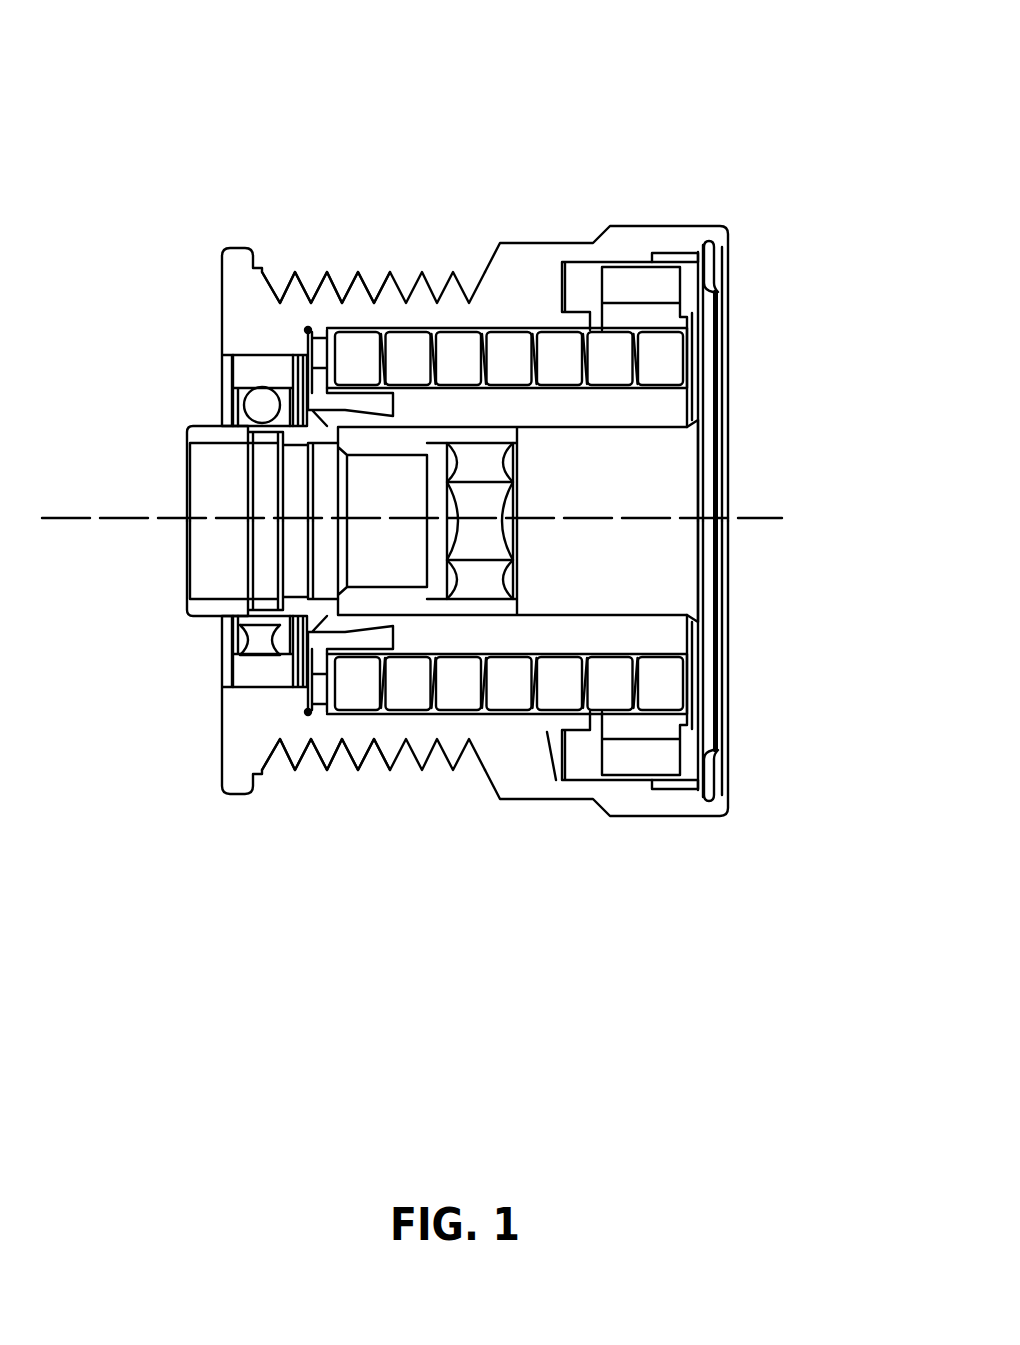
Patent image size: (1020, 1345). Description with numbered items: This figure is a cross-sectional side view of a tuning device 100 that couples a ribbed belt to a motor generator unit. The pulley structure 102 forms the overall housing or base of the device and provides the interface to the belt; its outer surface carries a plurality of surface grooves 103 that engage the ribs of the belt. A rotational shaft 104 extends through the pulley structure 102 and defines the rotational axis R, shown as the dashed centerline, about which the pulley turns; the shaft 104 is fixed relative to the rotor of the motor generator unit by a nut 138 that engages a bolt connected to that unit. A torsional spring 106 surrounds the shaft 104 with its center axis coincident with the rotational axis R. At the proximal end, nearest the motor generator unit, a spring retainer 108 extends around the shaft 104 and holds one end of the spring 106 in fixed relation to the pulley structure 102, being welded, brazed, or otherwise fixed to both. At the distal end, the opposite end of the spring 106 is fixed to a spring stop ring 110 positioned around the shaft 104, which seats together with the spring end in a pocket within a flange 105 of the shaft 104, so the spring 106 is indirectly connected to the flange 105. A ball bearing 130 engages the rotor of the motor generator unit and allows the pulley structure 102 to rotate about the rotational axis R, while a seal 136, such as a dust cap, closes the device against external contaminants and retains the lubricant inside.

The tuning device 100 is at (172, 100).
The pulley structure 102 is at (450, 272).
The surface grooves 103 is at (345, 300).
The rotational shaft 104 is at (512, 395).
The flange 105 is at (635, 263).
The torsional spring 106 is at (440, 715).
The spring retainer 108 is at (307, 697).
The spring stop ring 110 is at (667, 303).
The ball bearing 130 is at (221, 400).
The seal 136 is at (733, 343).
The nut 138 is at (517, 590).
The rotational axis R is at (110, 520).